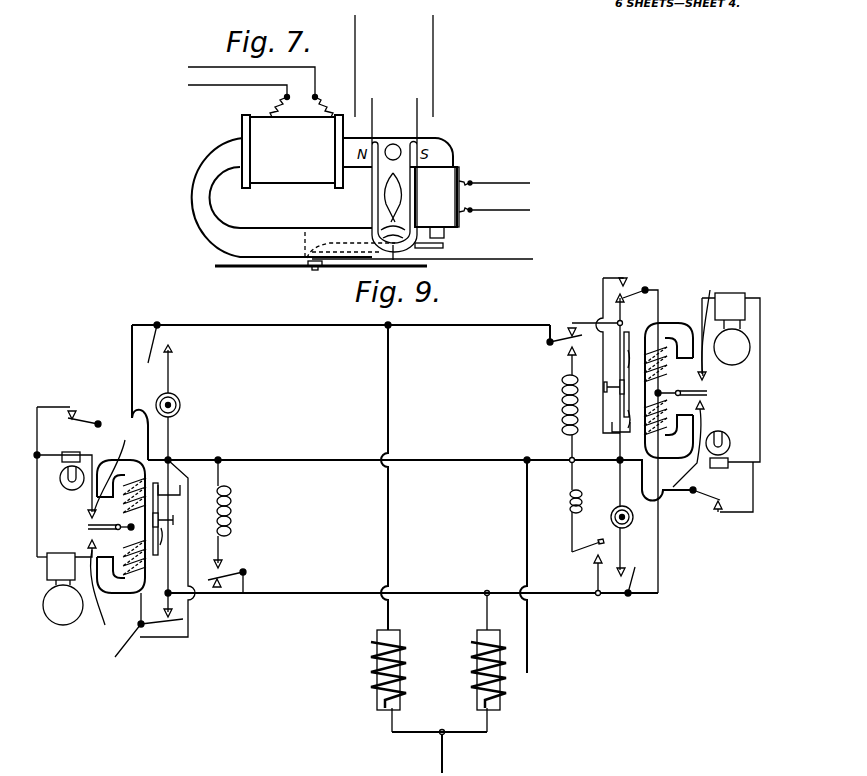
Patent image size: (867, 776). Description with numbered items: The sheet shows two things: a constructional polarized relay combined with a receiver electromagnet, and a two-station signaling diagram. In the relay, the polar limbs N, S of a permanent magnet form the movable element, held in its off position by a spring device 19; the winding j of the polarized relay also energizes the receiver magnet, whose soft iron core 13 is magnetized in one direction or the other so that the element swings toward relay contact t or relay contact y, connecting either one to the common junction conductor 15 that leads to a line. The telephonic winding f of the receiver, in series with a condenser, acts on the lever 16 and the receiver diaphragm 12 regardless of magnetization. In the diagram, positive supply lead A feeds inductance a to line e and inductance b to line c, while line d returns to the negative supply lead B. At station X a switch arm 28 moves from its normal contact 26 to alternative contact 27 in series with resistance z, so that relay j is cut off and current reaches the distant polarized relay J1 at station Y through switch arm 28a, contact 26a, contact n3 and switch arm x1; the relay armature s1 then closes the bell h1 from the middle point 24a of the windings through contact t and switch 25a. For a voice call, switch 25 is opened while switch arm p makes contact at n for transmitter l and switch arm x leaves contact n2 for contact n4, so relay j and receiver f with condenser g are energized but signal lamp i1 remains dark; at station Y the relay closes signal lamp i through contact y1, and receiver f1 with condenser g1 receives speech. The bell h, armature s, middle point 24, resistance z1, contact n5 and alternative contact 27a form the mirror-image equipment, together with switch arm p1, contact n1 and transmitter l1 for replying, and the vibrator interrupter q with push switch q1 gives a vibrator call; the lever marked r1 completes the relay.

In FIG. 7, the soft iron core 13 is at (322, 197).
In FIG. 7, the polarized relay winding j is at (265, 127).
In FIG. 9, the polarized relay winding j is at (147, 459).
In FIG. 7, the spring device 19 is at (380, 203).
In FIG. 7, the relay contact t is at (363, 117).
In FIG. 9, the relay contact t is at (100, 599).
In FIG. 7, the relay contact y is at (430, 117).
In FIG. 9, the relay contact y is at (109, 467).
In FIG. 7, the receiver telephonic winding f is at (472, 202).
In FIG. 9, the receiver telephonic winding f is at (168, 521).
In FIG. 7, the lever 16 is at (443, 245).
In FIG. 7, the receiver diaphragm 12 is at (279, 268).
In FIG. 7, the common junction conductor 15 is at (487, 262).
In FIG. 9, the line e is at (340, 326).
In FIG. 9, the line d is at (326, 452).
In FIG. 9, the line c is at (337, 592).
In FIG. 9, the negative supply lead B is at (547, 657).
In FIG. 9, the inductance a is at (375, 681).
In FIG. 9, the inductance b is at (497, 662).
In FIG. 9, the positive supply lead A is at (439, 752).
In FIG. 9, the switch arm p is at (160, 336).
In FIG. 9, the alternative contact n is at (172, 351).
In FIG. 9, the transmitter l is at (181, 405).
In FIG. 9, the contact n2 is at (166, 612).
In FIG. 9, the additional switch 25 is at (87, 416).
In FIG. 9, the signal lamp i1 is at (67, 494).
In FIG. 9, the relay armature s is at (88, 527).
In FIG. 9, the middle point of relay windings 24 is at (78, 543).
In FIG. 9, the bell h is at (60, 589).
In FIG. 9, the condenser g is at (180, 493).
In FIG. 9, the contact n4 is at (168, 639).
In FIG. 9, the switch arm x is at (139, 633).
In FIG. 9, the resistance z is at (228, 533).
In FIG. 9, the alternative contact 27 is at (234, 559).
In FIG. 9, the normal contact 26 is at (217, 588).
In FIG. 9, the switch arm 28 is at (228, 580).
In FIG. 9, the alternative contact 27a is at (566, 342).
In FIG. 9, the switch arm 28a is at (565, 333).
In FIG. 9, the normal contact 26a is at (574, 327).
In FIG. 9, the resistance z1 is at (555, 403).
In FIG. 9, the contact n5 is at (625, 277).
In FIG. 9, the contact n3 is at (625, 303).
In FIG. 9, the switch arm x1 is at (631, 294).
In FIG. 9, the station Y is at (669, 353).
In FIG. 9, the polarized relay J1 is at (663, 330).
In FIG. 9, the lever r1 is at (717, 318).
In FIG. 9, the bell h1 is at (729, 377).
In FIG. 9, the middle point of relay windings 24a is at (710, 392).
In FIG. 9, the receiver f1 is at (612, 381).
In FIG. 9, the condenser g1 is at (617, 456).
In FIG. 9, the additional switch 25a is at (710, 503).
In FIG. 9, the signal lamp i is at (729, 438).
In FIG. 9, the relay armature s1 is at (712, 413).
In FIG. 9, the contact y1 is at (687, 448).
In FIG. 9, the vibrator interrupter q is at (568, 502).
In FIG. 9, the push switch q1 is at (584, 550).
In FIG. 9, the alternative contact n1 is at (637, 518).
In FIG. 9, the transmitter l1 is at (617, 512).
In FIG. 9, the switch arm p1 is at (640, 566).